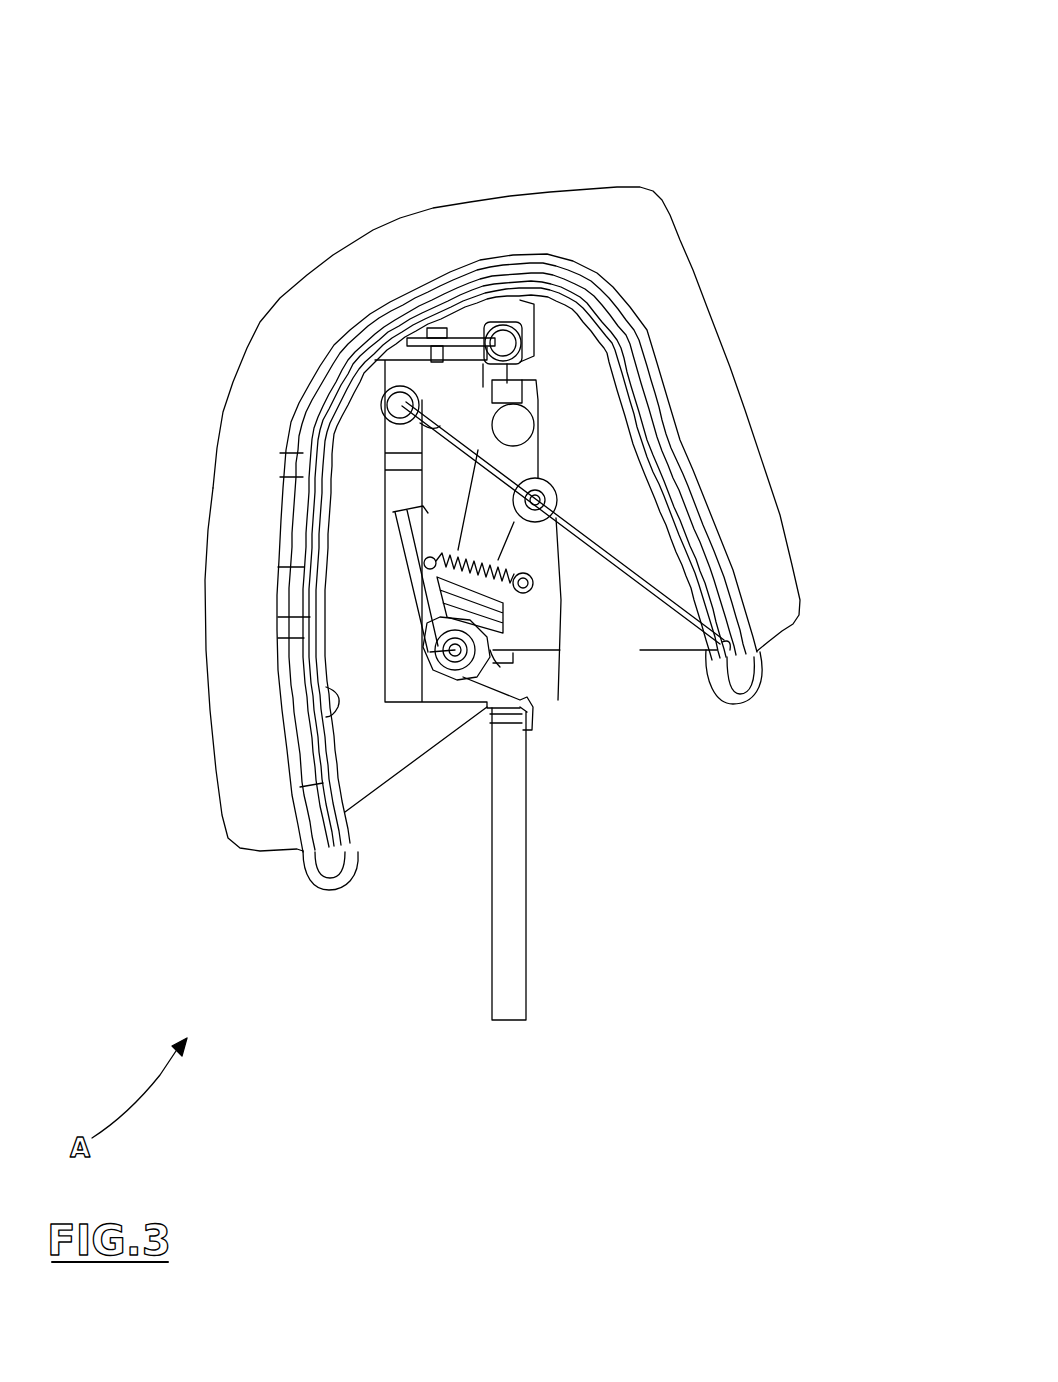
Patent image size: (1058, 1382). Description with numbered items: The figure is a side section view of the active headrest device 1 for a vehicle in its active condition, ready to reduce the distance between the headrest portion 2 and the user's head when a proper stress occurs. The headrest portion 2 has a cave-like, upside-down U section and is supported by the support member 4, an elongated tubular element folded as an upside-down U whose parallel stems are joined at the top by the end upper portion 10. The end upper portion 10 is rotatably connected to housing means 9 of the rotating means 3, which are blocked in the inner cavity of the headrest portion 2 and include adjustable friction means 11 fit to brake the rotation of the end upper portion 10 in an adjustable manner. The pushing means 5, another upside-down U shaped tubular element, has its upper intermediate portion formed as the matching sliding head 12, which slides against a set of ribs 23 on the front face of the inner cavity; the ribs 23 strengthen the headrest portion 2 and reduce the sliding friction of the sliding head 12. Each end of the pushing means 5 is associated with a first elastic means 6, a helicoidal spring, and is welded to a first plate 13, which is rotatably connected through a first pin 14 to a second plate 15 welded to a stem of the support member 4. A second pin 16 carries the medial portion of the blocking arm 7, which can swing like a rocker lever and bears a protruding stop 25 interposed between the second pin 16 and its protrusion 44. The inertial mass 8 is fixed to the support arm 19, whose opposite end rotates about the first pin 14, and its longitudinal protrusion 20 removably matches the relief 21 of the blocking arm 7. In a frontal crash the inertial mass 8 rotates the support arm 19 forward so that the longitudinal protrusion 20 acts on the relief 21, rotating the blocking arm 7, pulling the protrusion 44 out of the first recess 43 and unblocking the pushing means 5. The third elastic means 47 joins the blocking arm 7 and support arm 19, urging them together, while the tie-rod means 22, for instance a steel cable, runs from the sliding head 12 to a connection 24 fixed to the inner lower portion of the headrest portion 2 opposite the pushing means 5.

The active headrest device 1 is at (240, 98).
The headrest portion 2 is at (664, 182).
The rotating means 3 is at (578, 510).
The support member 4 is at (619, 917).
The pushing means 5 is at (292, 527).
The first elastic means 6 is at (647, 886).
The blocking arm 7 is at (704, 609).
The inertial mass 8 is at (698, 387).
The housing means 9 is at (548, 183).
The end upper portion 10 is at (488, 184).
The adjustable friction means 11 is at (431, 183).
The matching sliding head 12 is at (251, 346).
The first plate 13 is at (465, 905).
The first pin 14 is at (411, 867).
The second plate 15 is at (684, 766).
The second pin 16 is at (712, 440).
The support arm 19 is at (723, 518).
The longitudinal protrusion 20 is at (693, 414).
The relief 21 is at (660, 425).
The tie-rod means 22 is at (387, 569).
The ribs 23 is at (276, 754).
The connection 24 is at (818, 752).
The protruding stop 25 is at (829, 695).
The first recess 43 is at (344, 832).
The protrusion 44 is at (698, 797).
The third elastic means 47 is at (299, 574).